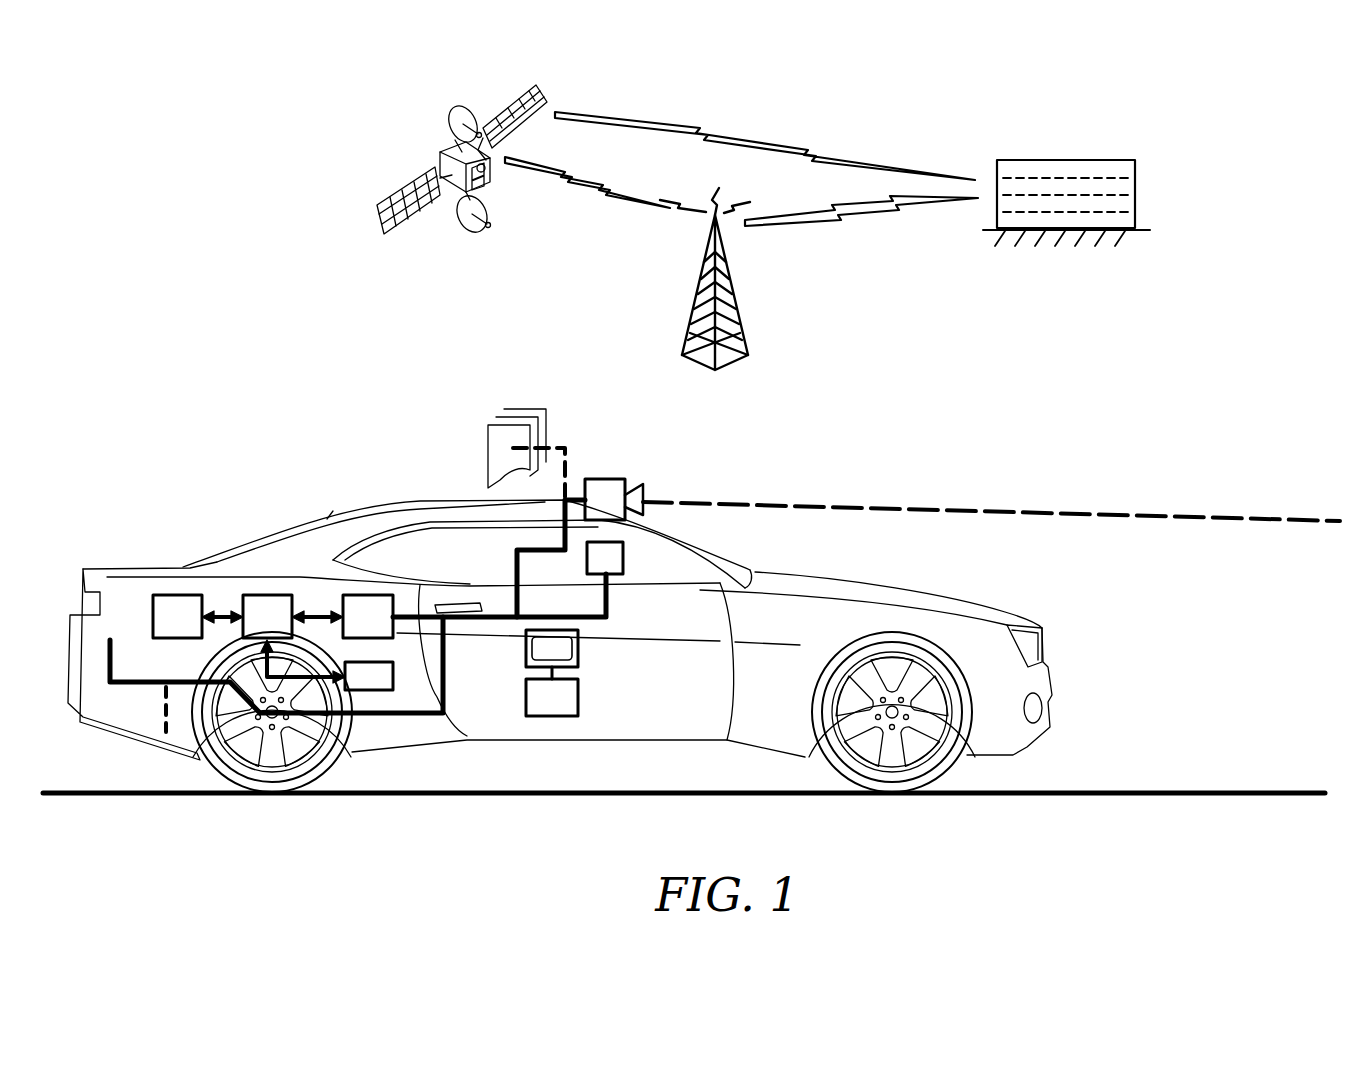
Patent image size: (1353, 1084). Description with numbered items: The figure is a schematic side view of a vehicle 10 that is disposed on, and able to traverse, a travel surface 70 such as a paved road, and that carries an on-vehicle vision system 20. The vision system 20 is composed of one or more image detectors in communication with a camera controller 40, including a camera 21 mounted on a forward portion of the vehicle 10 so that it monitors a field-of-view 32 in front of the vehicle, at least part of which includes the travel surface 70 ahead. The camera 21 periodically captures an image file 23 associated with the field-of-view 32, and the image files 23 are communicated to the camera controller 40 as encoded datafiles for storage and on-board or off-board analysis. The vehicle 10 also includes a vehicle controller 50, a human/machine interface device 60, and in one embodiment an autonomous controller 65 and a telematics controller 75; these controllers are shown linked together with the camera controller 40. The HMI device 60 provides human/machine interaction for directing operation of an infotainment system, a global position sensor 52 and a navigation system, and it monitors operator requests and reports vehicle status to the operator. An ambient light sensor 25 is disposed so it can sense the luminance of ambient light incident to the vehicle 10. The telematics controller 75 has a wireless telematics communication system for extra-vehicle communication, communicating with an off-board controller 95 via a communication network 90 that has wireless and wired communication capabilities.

The vehicle 10 is at (936, 577).
The on-vehicle vision system 20 is at (514, 563).
The camera 21 is at (622, 477).
The image file 23 is at (486, 447).
The ambient light sensor 25 is at (625, 563).
The field-of-view (FOV) 32 is at (771, 500).
The camera controller 40 is at (365, 594).
The vehicle controller 50 is at (267, 594).
The global position sensor (GPS) 52 is at (526, 695).
The human/machine interface (HMI) device 60 is at (526, 657).
The autonomous controller 65 is at (360, 745).
The travel surface 70 is at (1125, 790).
The telematics controller 75 is at (177, 594).
The communication network 90 is at (578, 259).
The off-board controller 95 is at (1140, 185).